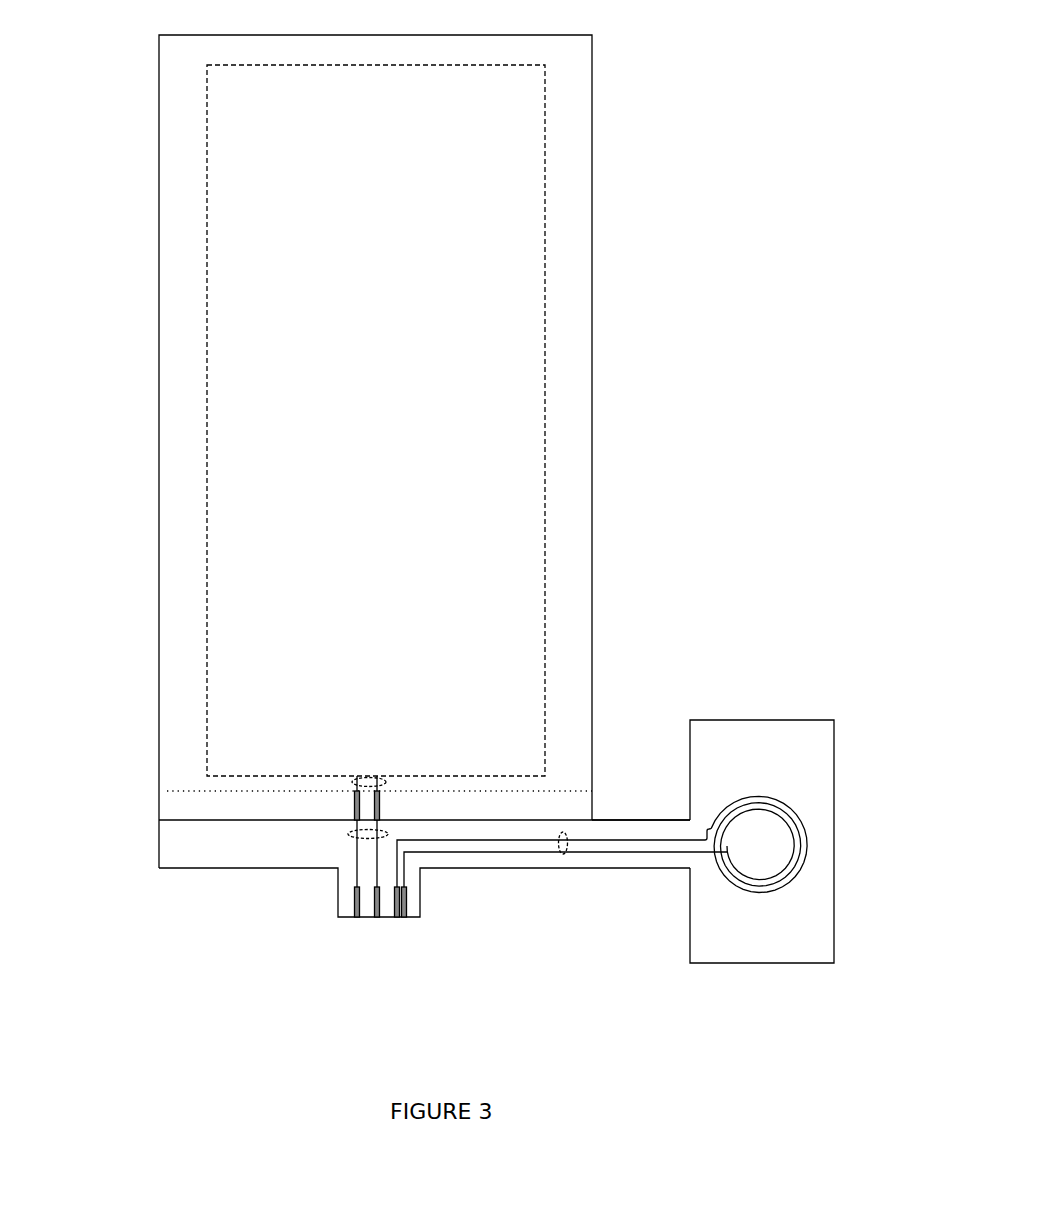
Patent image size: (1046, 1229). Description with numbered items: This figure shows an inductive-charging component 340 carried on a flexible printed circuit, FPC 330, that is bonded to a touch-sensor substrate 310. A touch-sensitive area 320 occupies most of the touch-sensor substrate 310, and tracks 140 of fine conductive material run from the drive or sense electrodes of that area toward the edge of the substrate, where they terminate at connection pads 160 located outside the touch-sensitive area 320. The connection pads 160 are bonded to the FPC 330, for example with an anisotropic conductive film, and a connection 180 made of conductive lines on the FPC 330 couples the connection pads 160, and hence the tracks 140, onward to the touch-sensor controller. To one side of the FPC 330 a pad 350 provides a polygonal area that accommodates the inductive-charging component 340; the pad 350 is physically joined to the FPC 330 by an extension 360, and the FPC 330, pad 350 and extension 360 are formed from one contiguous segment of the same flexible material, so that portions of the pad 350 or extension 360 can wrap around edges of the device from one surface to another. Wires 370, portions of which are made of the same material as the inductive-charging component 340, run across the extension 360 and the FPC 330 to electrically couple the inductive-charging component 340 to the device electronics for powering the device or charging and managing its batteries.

The touch-sensor substrate 310 is at (157, 187).
The touch-sensitive area 320 is at (388, 448).
The FPC 330 is at (262, 856).
The tracks 140 is at (344, 783).
The connection pads 160 is at (352, 813).
The connection 180 is at (366, 838).
The inductive-charging component 340 is at (775, 908).
The pad 350 is at (757, 718).
The extension 360 is at (635, 815).
The wires 370 is at (557, 857).